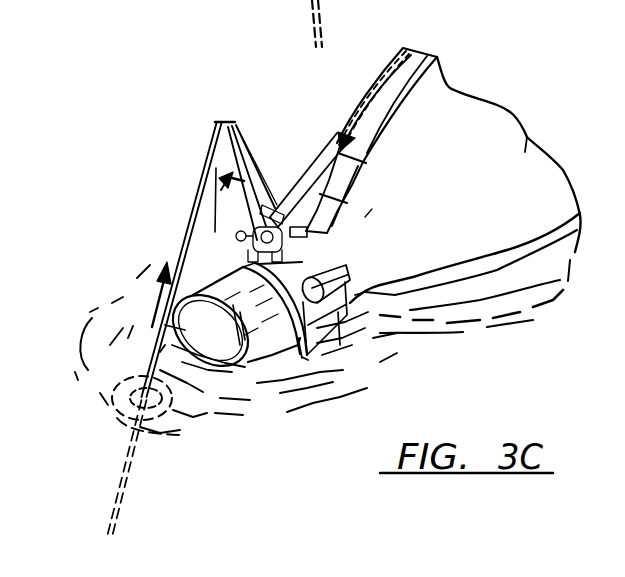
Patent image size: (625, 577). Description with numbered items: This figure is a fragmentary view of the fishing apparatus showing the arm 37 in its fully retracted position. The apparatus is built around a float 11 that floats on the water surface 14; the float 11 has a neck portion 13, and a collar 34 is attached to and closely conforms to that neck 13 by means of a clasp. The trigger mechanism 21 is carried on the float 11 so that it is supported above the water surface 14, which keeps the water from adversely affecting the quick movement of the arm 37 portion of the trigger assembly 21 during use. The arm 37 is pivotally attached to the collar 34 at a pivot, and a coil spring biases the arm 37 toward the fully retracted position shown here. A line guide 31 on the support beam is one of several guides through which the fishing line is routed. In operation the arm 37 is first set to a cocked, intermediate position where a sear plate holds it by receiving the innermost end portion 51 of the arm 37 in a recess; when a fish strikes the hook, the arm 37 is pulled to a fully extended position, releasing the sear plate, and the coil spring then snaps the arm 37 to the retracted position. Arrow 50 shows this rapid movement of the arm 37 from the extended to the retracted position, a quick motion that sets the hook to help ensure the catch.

The float 11 is at (527, 137).
The neck portion 13 is at (303, 257).
The water surface 14 is at (117, 368).
The trigger mechanism 21 is at (148, 172).
The line guide 31 is at (373, 85).
The collar 34 is at (350, 262).
The arm 37 is at (240, 140).
The arrow 50 is at (205, 213).
The innermost end portion 51 is at (150, 298).